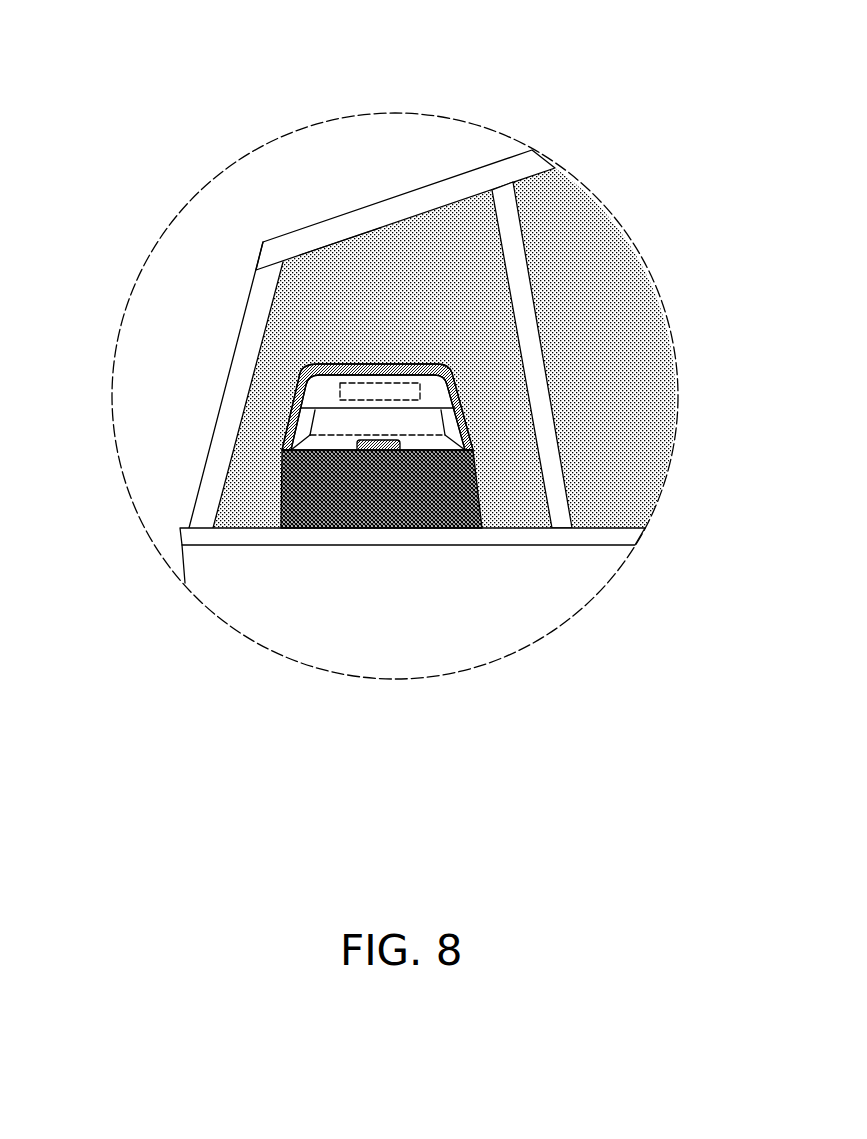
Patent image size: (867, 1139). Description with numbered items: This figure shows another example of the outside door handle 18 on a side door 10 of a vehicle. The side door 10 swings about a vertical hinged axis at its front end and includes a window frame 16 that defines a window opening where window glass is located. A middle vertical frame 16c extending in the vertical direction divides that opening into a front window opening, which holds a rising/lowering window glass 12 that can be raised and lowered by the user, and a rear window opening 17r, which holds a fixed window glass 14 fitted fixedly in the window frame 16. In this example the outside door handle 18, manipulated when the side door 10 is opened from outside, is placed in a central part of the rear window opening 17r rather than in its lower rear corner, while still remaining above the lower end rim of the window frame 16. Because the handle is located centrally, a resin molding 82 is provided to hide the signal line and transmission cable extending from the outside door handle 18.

The side door 10 is at (535, 600).
The rising/lowering window glass 12 is at (608, 273).
The fixed window glass 14 is at (452, 227).
The window frame 16 is at (227, 415).
The middle vertical frame 16c is at (555, 430).
The rear window opening 17r is at (322, 238).
The outside door handle 18 is at (427, 423).
The resin molding 82 is at (337, 520).